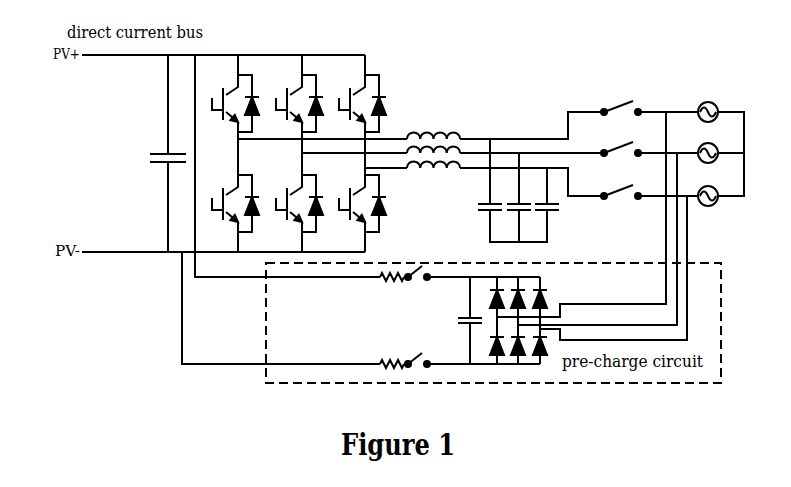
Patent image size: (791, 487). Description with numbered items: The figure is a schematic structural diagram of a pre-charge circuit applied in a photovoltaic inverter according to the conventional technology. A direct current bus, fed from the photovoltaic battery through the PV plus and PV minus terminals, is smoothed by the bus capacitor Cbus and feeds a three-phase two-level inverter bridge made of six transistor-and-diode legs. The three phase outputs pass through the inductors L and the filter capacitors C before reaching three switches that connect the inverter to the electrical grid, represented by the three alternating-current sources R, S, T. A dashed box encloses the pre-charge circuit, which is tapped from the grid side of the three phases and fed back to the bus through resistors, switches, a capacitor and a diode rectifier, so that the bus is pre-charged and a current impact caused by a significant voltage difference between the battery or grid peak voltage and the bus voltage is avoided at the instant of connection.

The direct current bus capacitor Cbus is at (152, 158).
The filter inductor L is at (433, 138).
The filter capacitor C is at (509, 208).
The grid phase R source R is at (708, 102).
The grid phase S source S is at (708, 143).
The grid phase T source T is at (708, 186).